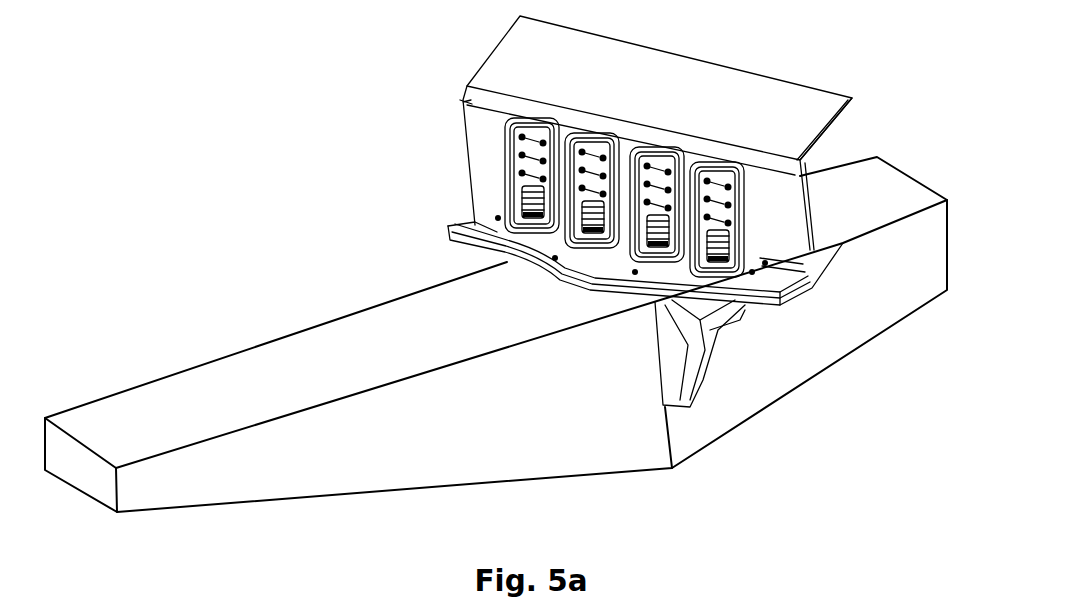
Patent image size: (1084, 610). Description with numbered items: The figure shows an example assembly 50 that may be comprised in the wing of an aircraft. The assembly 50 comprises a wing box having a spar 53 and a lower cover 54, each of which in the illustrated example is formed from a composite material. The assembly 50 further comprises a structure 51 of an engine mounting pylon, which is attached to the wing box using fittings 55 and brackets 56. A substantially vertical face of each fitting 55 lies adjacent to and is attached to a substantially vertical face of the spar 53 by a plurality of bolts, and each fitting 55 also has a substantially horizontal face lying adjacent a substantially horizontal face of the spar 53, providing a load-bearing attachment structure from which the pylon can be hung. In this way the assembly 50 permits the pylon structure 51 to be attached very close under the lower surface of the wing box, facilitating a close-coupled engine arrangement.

The assembly 50 is at (262, 100).
The structure of an engine mounting pylon 51 is at (280, 363).
The spar 53 is at (688, 80).
The lower cover 54 is at (823, 240).
The fittings 55 is at (573, 173).
The brackets 56 is at (718, 332).